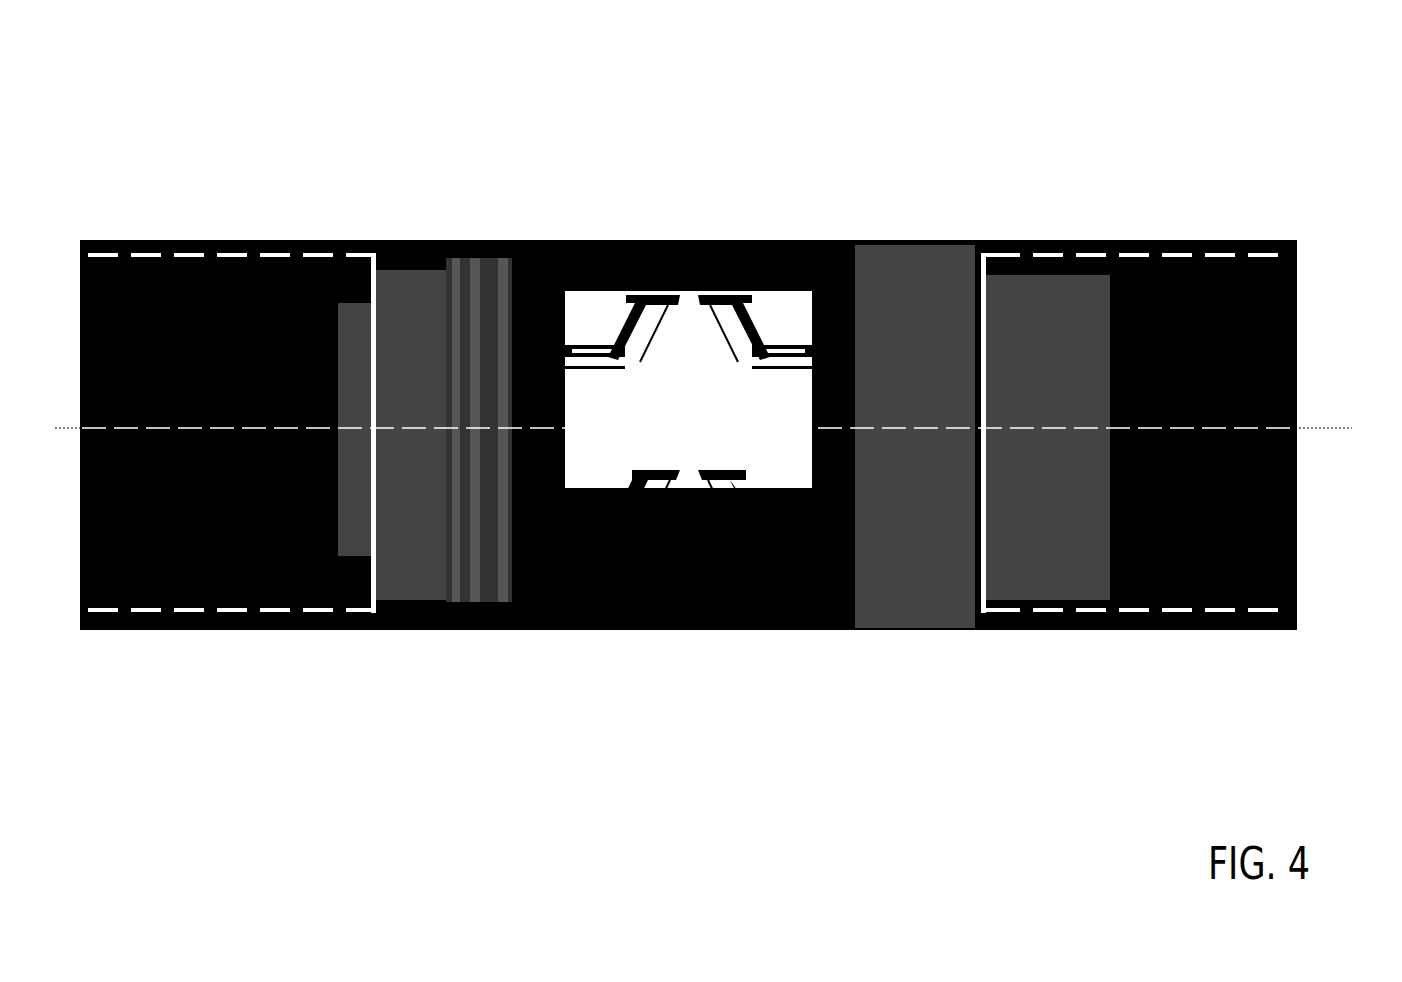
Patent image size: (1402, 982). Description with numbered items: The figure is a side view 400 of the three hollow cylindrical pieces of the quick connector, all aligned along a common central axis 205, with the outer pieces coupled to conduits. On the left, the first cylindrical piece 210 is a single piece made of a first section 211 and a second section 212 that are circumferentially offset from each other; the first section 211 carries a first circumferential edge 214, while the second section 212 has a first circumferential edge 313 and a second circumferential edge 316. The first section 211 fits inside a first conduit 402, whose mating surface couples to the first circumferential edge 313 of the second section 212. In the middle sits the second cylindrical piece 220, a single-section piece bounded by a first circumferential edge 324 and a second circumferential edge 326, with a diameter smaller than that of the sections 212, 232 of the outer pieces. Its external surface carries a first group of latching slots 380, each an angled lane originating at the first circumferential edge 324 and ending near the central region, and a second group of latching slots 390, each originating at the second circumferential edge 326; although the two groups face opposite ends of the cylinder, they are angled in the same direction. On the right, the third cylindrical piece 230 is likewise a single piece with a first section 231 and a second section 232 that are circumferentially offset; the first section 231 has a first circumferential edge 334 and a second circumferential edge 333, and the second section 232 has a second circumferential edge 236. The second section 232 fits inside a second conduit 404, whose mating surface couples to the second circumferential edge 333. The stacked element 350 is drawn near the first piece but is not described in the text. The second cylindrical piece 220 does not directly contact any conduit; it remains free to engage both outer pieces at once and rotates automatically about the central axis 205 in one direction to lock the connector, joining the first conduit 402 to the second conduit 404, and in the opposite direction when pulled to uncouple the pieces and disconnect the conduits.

The side view 400 is at (88, 80).
The central axis 205 is at (1325, 430).
The first cylindrical piece 210 is at (432, 522).
The first section 211 is at (355, 405).
The second section 212 is at (411, 435).
The first circumferential edge 214 is at (338, 493).
The second cylindrical piece 220 is at (693, 525).
The third cylindrical piece 230 is at (1003, 519).
The first section 231 is at (915, 436).
The second section 232 is at (1048, 437).
The second circumferential edge 236 is at (1107, 515).
The first circumferential edge 313 is at (379, 553).
The second circumferential edge 316 is at (513, 533).
The first circumferential edge 324 is at (565, 412).
The second circumferential edge 326 is at (812, 410).
The second circumferential edge 333 is at (975, 537).
The first circumferential edge 334 is at (856, 530).
The stacked elements 350 is at (488, 605).
The first group of latching slots 380 is at (614, 520).
The second group of latching slots 390 is at (764, 520).
The first conduit 402 is at (238, 262).
The second conduit 404 is at (1178, 262).